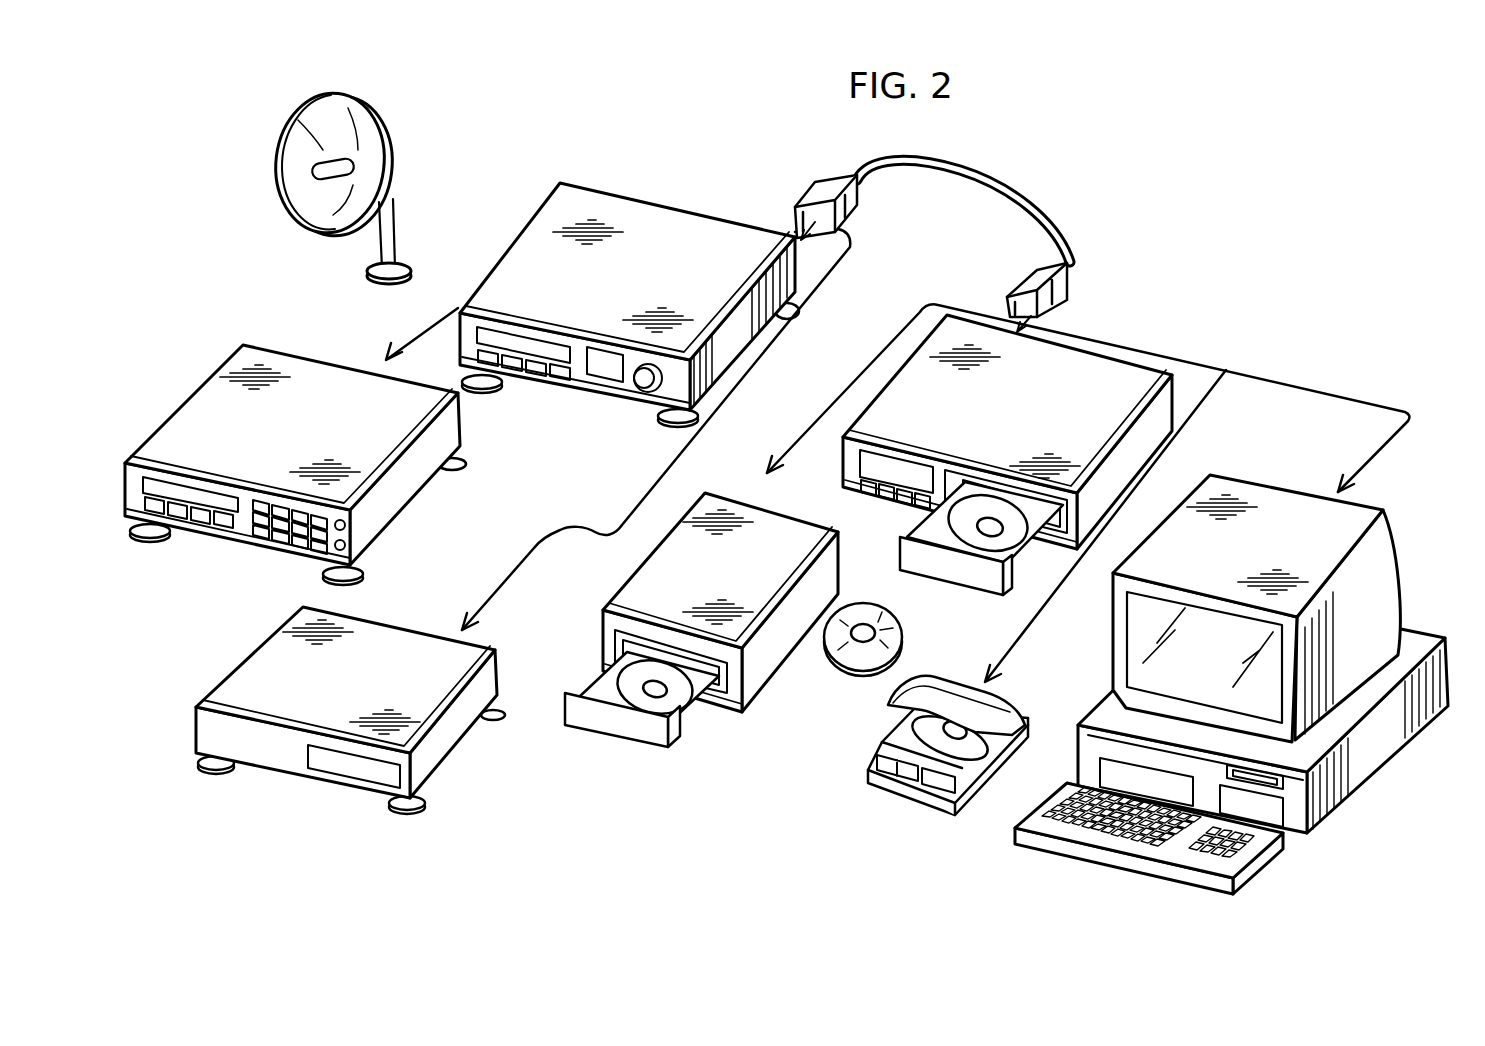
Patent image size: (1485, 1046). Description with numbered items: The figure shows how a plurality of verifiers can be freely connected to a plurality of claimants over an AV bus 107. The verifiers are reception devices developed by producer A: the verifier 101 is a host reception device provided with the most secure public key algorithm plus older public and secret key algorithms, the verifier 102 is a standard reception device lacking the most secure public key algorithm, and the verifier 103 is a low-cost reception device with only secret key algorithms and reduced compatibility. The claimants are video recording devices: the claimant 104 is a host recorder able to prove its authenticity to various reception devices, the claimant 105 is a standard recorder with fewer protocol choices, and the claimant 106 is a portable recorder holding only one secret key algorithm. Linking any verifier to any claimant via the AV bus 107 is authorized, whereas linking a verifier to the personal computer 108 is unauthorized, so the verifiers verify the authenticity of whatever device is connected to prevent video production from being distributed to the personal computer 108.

The verifier 101 is at (683, 227).
The verifier 102 is at (377, 635).
The verifier 103 is at (447, 425).
The claimant 104 is at (1050, 363).
The claimant 105 is at (743, 523).
The claimant 106 is at (985, 707).
The AV bus 107 is at (1027, 190).
The personal computer 108 is at (1393, 580).